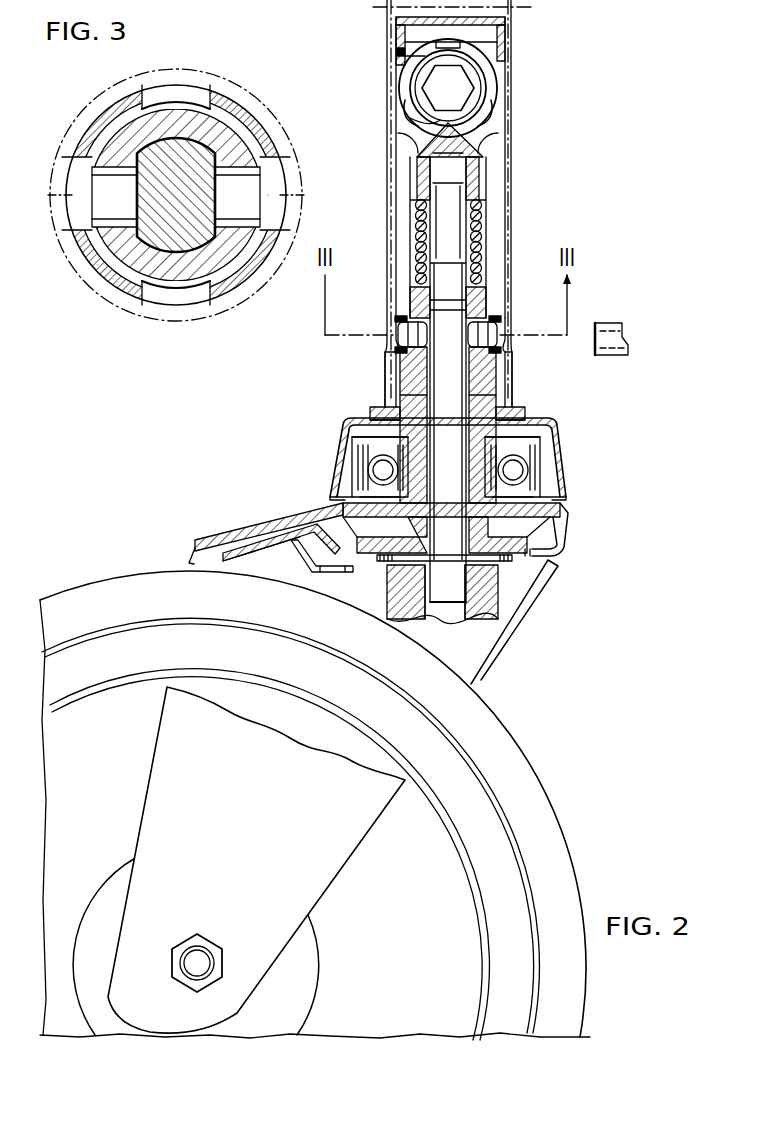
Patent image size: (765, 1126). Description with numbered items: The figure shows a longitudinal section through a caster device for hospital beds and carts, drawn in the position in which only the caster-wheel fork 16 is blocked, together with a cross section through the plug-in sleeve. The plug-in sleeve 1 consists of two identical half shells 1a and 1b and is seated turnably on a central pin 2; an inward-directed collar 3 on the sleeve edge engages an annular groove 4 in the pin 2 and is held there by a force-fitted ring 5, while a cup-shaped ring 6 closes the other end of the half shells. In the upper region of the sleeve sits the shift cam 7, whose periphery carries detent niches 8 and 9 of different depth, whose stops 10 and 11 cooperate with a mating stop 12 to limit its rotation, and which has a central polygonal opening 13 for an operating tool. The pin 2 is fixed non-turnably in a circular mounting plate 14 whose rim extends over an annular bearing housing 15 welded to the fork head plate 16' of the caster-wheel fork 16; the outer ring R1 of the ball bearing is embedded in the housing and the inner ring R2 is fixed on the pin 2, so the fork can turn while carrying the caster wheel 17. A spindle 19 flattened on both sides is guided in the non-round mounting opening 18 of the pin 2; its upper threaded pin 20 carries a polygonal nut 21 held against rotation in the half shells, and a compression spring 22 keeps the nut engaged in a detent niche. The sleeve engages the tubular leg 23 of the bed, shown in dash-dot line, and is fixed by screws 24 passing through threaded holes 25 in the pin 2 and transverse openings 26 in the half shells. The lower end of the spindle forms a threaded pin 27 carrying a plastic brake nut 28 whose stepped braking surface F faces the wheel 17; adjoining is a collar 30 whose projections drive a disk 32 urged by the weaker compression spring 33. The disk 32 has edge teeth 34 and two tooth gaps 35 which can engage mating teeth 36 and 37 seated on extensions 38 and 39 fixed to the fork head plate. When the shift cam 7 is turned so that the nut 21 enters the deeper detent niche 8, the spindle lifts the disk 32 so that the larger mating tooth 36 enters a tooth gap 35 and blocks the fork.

In FIG. 3, the plug-in sleeve 1 is at (110, 293).
In FIG. 2, the plug-in sleeve 1 is at (512, 150).
In FIG. 3, the half shell 1a is at (232, 282).
In FIG. 2, the half shell 1a is at (403, 170).
In FIG. 3, the half shell 1b is at (237, 120).
In FIG. 3, the pin 2 is at (112, 153).
In FIG. 2, the pin 2 is at (500, 375).
In FIG. 2, the collar 3 is at (514, 407).
In FIG. 2, the annular groove 4 is at (405, 408).
In FIG. 2, the ring 5 is at (518, 414).
In FIG. 2, the cup-shaped ring 6 is at (507, 33).
In FIG. 2, the shift cam 7 is at (478, 98).
In FIG. 2, the detent niche 8 is at (470, 123).
In FIG. 2, the detent niche 9 is at (413, 118).
In FIG. 2, the stop 10 is at (490, 115).
In FIG. 2, the stop 11 is at (397, 52).
In FIG. 2, the mating stop 12 is at (452, 42).
In FIG. 2, the polygonal opening 13 is at (437, 87).
In FIG. 2, the mounting plate 14 is at (353, 422).
In FIG. 2, the bearing housing 15 is at (350, 456).
In FIG. 2, the caster-wheel fork 16 is at (578, 540).
In FIG. 2, the fork head plate 16' is at (486, 500).
In FIG. 2, the caster wheel 17 is at (518, 777).
In FIG. 3, the mounting opening 18 is at (113, 227).
In FIG. 2, the mounting opening 18 is at (382, 372).
In FIG. 3, the spindle 19 is at (178, 155).
In FIG. 2, the spindle 19 is at (448, 282).
In FIG. 2, the threaded pin 20 is at (443, 195).
In FIG. 2, the nut 21 is at (425, 152).
In FIG. 2, the compression spring 22 is at (415, 227).
In FIG. 3, the tubular leg 23 is at (146, 78).
In FIG. 2, the tubular leg 23 is at (508, 190).
In FIG. 2, the screw 24 is at (610, 335).
In FIG. 3, the threaded hole 25 is at (105, 193).
In FIG. 2, the threaded hole 25 is at (413, 327).
In FIG. 3, the transverse opening 26 is at (205, 95).
In FIG. 2, the transverse opening 26 is at (400, 327).
In FIG. 2, the threaded pin 27 is at (477, 617).
In FIG. 2, the brake nut 28 is at (487, 621).
In FIG. 2, the collar 30 is at (506, 608).
In FIG. 2, the disk 32 is at (550, 543).
In FIG. 2, the compression spring 33 is at (388, 558).
In FIG. 2, the teeth 34 is at (512, 568).
In FIG. 2, the tooth gap 35 is at (313, 566).
In FIG. 2, the mating tooth 36 is at (290, 545).
In FIG. 2, the mating teeth 37 is at (350, 569).
In FIG. 2, the extension 38 is at (270, 527).
In FIG. 2, the extension 39 is at (228, 533).
In FIG. 2, the braking surface F is at (470, 600).
In FIG. 2, the outer ring R1 is at (548, 468).
In FIG. 2, the inner ring R2 is at (532, 445).